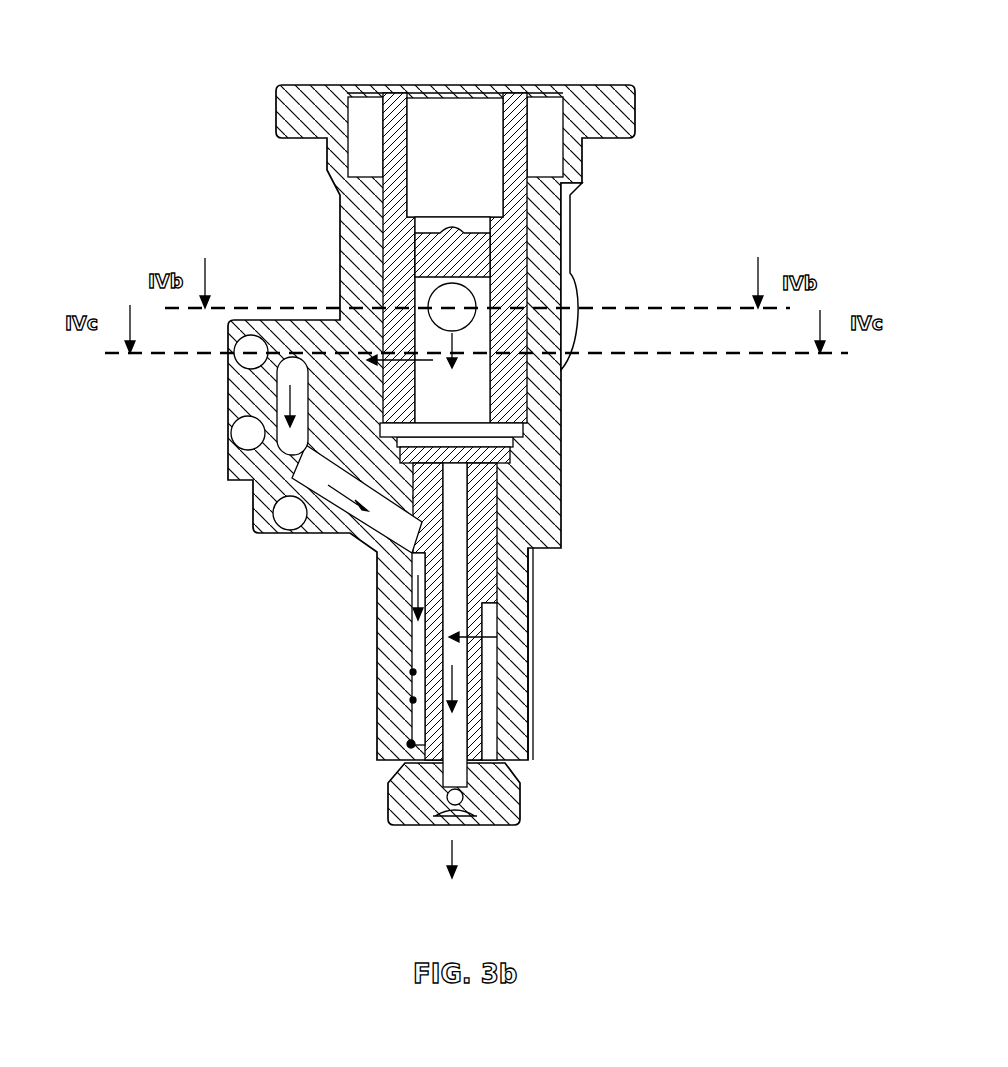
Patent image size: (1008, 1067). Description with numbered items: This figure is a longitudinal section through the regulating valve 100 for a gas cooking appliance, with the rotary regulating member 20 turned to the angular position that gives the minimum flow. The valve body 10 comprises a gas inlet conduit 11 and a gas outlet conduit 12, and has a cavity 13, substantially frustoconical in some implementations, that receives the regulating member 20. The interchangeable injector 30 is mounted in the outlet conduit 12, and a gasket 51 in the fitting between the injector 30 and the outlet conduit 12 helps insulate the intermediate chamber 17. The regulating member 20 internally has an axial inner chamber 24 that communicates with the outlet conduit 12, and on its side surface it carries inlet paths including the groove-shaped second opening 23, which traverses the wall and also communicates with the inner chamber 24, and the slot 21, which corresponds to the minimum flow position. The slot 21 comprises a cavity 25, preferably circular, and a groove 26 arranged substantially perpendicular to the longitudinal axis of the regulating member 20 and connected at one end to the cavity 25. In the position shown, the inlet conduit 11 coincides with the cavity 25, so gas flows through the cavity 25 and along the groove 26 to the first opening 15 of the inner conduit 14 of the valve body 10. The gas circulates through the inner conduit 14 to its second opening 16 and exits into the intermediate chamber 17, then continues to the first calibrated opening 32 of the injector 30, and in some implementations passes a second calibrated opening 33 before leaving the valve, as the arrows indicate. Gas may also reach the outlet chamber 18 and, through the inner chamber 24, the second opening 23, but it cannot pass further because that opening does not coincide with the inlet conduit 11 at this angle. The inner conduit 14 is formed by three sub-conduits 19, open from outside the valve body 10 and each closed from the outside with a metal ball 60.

The regulating valve 100 is at (203, 147).
The valve body 10 is at (262, 82).
The gas inlet conduit 11 is at (547, 300).
The gas outlet conduit 12 is at (517, 712).
The cavity 13 is at (372, 228).
The inner conduit 14 is at (377, 543).
The first opening 15 is at (367, 357).
The second opening 16 is at (470, 535).
The intermediate chamber 17 is at (530, 583).
The outlet chamber 18 is at (507, 468).
The sub-conduits 19 is at (385, 548).
The rotary regulating member 20 is at (563, 185).
The slot 21 is at (458, 378).
The second opening 23 is at (383, 300).
The axial inner chamber 24 is at (467, 407).
The cavity 25 is at (433, 340).
The groove 26 is at (537, 267).
The injector 30 is at (365, 797).
The first calibrated opening 32 is at (500, 645).
The second calibrated opening 33 is at (520, 803).
The gasket 51 is at (513, 503).
The metal ball 60 is at (233, 340).